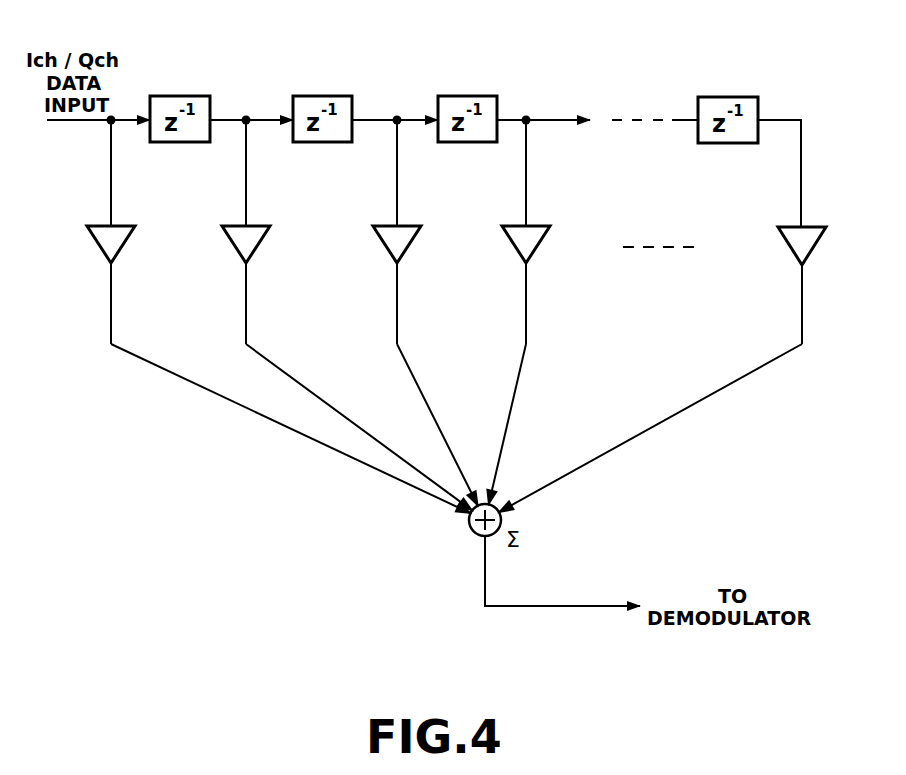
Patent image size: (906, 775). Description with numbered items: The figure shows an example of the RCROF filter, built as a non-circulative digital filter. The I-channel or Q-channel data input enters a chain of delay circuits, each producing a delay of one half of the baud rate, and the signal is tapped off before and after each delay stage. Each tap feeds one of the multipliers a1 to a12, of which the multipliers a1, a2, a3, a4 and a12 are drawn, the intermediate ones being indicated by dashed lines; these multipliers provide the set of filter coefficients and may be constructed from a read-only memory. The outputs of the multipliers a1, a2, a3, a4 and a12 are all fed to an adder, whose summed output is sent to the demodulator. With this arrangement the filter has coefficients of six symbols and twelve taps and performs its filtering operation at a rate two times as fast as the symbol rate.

The multiplier a1 is at (130, 233).
The multiplier a2 is at (264, 233).
The multiplier a3 is at (415, 233).
The multiplier a4 is at (544, 233).
The multiplier a12 is at (819, 234).